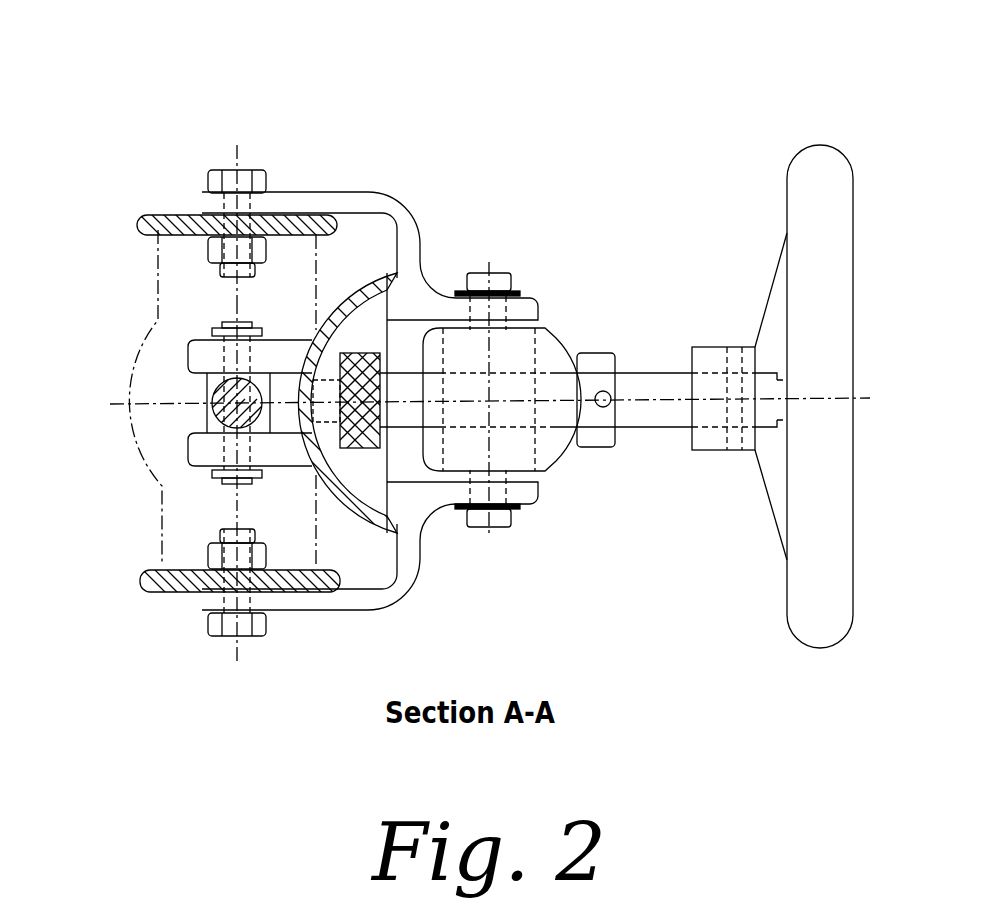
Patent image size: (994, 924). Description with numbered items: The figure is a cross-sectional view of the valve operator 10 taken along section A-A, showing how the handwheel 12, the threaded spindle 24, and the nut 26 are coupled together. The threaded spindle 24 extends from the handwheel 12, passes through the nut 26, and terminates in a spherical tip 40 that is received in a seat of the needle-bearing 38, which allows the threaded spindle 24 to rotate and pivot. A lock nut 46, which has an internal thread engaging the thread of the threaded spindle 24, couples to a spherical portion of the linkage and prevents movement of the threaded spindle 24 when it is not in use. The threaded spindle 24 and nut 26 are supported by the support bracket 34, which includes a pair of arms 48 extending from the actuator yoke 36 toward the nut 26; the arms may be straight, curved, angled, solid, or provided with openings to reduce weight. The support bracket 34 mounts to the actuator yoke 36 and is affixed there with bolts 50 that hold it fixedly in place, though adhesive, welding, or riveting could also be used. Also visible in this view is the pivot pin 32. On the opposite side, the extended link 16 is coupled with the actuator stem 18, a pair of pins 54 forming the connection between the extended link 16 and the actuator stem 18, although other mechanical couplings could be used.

The valve operator 10 is at (533, 69).
The handwheel 12 is at (816, 152).
The extended link 16 is at (198, 352).
The actuator stem 18 is at (212, 400).
The threaded spindle 24 is at (665, 386).
The nut 26 is at (517, 447).
The pivot pin 32 is at (496, 272).
The support bracket 34 is at (412, 270).
The actuator yoke 36 is at (170, 218).
The needle-bearing 38 is at (338, 463).
The spherical tip 40 is at (331, 352).
The lock nut 46 is at (598, 352).
The arms 48 is at (288, 202).
The bolts 50 is at (232, 145).
The pins 54 is at (234, 322).